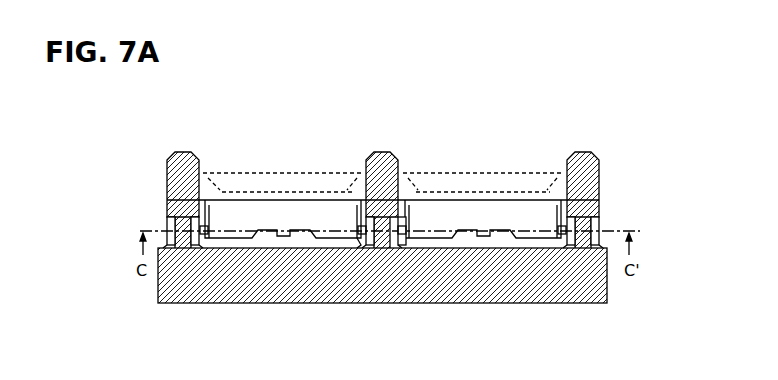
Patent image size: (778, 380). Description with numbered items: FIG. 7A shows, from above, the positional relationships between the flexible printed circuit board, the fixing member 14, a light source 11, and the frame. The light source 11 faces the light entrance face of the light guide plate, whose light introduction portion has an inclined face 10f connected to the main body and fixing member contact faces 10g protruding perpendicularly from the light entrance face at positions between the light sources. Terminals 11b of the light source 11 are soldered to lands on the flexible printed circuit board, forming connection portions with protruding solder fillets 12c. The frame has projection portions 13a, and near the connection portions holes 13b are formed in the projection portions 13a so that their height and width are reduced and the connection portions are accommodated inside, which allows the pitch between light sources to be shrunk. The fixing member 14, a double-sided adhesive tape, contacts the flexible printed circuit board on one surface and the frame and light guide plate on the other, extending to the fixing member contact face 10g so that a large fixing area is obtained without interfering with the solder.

The inclined face 10f is at (280, 180).
The fixing member contact face 10g is at (412, 190).
The light source 11 is at (223, 213).
The terminal 11b is at (360, 247).
The solder fillet 12c is at (364, 240).
The projection portion 13a is at (367, 197).
The hole 13b is at (404, 246).
The fixing member 14 is at (390, 152).